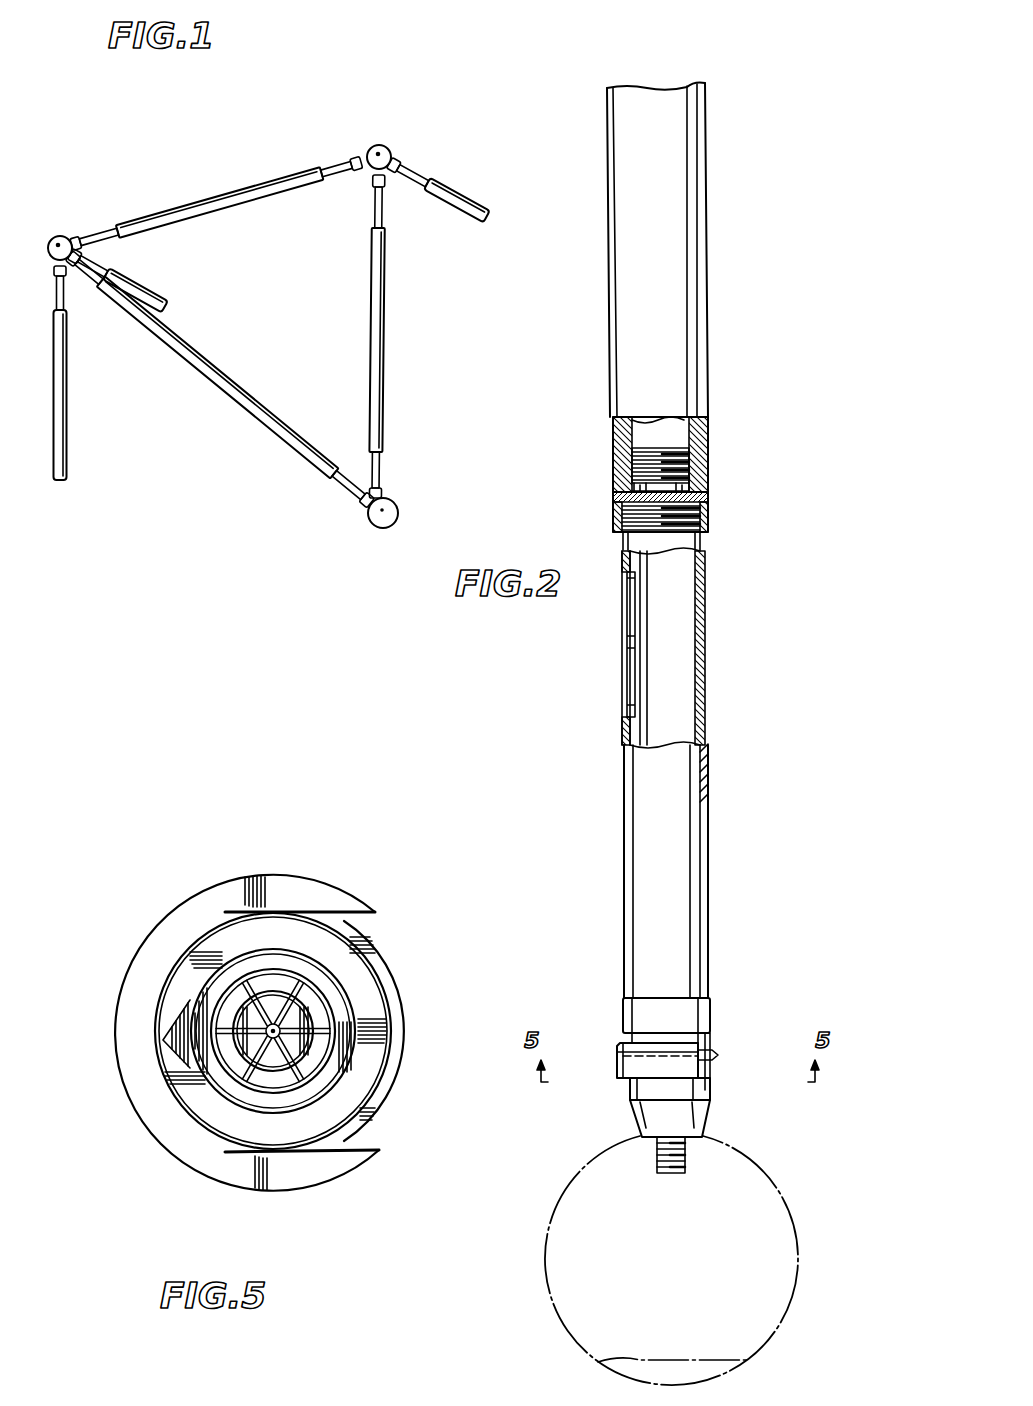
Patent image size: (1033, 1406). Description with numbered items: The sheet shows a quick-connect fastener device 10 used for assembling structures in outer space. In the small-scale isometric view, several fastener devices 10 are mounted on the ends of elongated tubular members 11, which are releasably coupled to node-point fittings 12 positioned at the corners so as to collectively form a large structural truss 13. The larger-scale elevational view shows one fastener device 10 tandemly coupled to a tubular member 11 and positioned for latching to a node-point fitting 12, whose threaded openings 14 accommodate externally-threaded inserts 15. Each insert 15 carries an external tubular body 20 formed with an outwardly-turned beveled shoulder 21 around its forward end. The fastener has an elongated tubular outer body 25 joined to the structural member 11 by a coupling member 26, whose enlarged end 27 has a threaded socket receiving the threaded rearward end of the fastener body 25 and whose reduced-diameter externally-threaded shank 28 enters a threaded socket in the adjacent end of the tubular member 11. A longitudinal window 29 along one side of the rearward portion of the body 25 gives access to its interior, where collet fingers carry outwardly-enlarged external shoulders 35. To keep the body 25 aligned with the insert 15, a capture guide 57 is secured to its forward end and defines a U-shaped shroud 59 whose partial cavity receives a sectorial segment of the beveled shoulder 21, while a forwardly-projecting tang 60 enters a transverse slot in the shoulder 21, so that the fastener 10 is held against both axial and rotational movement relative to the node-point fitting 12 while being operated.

In FIG. 1, the quick-connect fastener device 10 is at (417, 170).
In FIG. 2, the quick-connect fastener device 10 is at (720, 700).
In FIG. 1, the tubular member 11 is at (238, 190).
In FIG. 2, the tubular member 11 is at (708, 277).
In FIG. 1, the node-point fitting 12 is at (62, 236).
In FIG. 2, the node-point fitting 12 is at (790, 1200).
In FIG. 1, the structural truss 13 is at (251, 420).
In FIG. 2, the threaded opening 14 is at (657, 1170).
In FIG. 2, the insert 15 is at (713, 1108).
In FIG. 2, the external tubular body 20 is at (627, 1113).
In FIG. 2, the beveled shoulder 21 is at (718, 1057).
In FIG. 2, the tubular outer body 25 is at (705, 593).
In FIG. 5, the tubular outer body 25 is at (367, 1080).
In FIG. 2, the coupling member 26 is at (643, 465).
In FIG. 2, the enlarged end 27 is at (710, 508).
In FIG. 2, the externally-threaded shank 28 is at (705, 460).
In FIG. 1, the longitudinal window 29 is at (337, 166).
In FIG. 2, the longitudinal window 29 is at (630, 657).
In FIG. 5, the external shoulders 35 is at (322, 1047).
In FIG. 2, the capture guide 57 is at (614, 1047).
In FIG. 5, the capture guide 57 is at (165, 905).
In FIG. 5, the U-shaped shroud 59 is at (163, 1150).
In FIG. 5, the tang 60 is at (165, 1042).